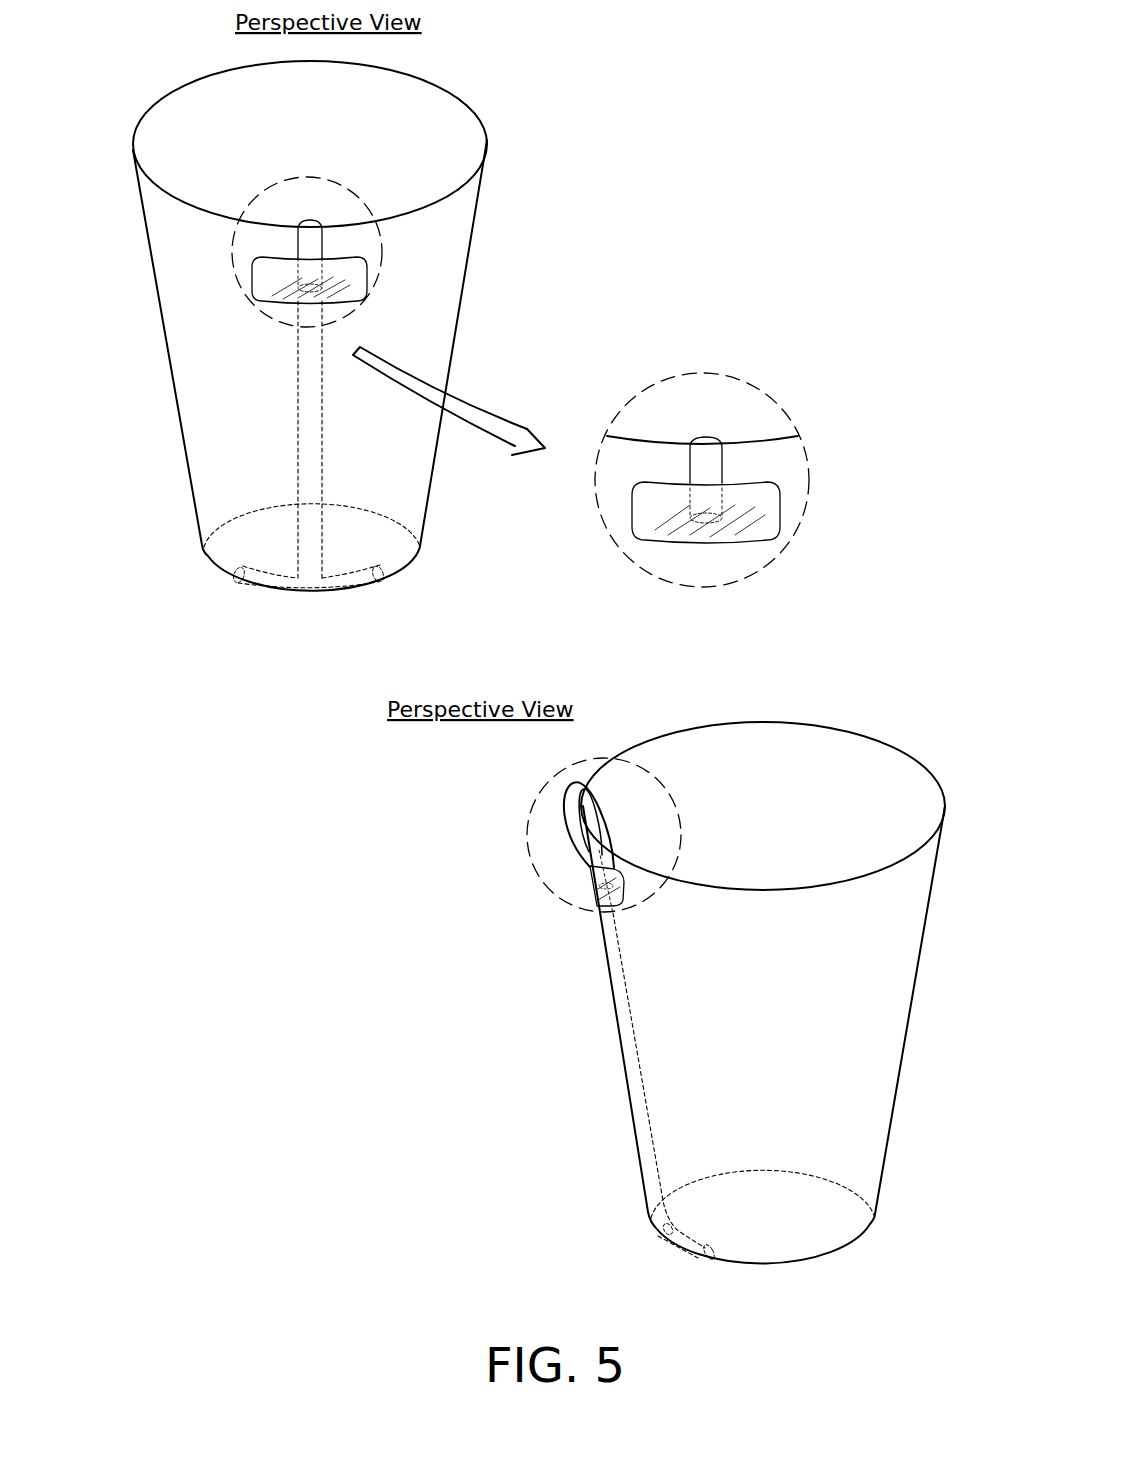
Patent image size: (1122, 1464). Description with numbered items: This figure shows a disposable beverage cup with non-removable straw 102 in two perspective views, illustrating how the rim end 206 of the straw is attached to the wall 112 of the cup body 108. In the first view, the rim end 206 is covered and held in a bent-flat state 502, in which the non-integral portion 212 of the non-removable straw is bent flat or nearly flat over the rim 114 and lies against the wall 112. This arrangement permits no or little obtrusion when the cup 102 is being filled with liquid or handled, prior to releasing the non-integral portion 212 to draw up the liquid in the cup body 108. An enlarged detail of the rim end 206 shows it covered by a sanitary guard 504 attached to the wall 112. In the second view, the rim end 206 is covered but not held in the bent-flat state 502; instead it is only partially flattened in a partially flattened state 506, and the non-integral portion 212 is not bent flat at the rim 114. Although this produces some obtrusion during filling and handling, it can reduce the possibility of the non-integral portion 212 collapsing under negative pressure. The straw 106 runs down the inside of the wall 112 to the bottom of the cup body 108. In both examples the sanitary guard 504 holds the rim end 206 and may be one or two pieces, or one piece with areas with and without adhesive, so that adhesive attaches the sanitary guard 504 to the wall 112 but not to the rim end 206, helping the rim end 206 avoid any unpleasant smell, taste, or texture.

The disposable beverage cup with non-removable straw 102 is at (443, 302).
The rim 114 is at (491, 148).
The cup body 108 is at (446, 316).
The wall 112 is at (177, 410).
The non-integral portion 212 is at (300, 218).
The rim end 206 is at (600, 869).
The sanitary guard 504 is at (588, 912).
The bent-flat state 502 is at (332, 245).
The partially flattened state 506 is at (560, 866).
The straw 106 is at (627, 973).